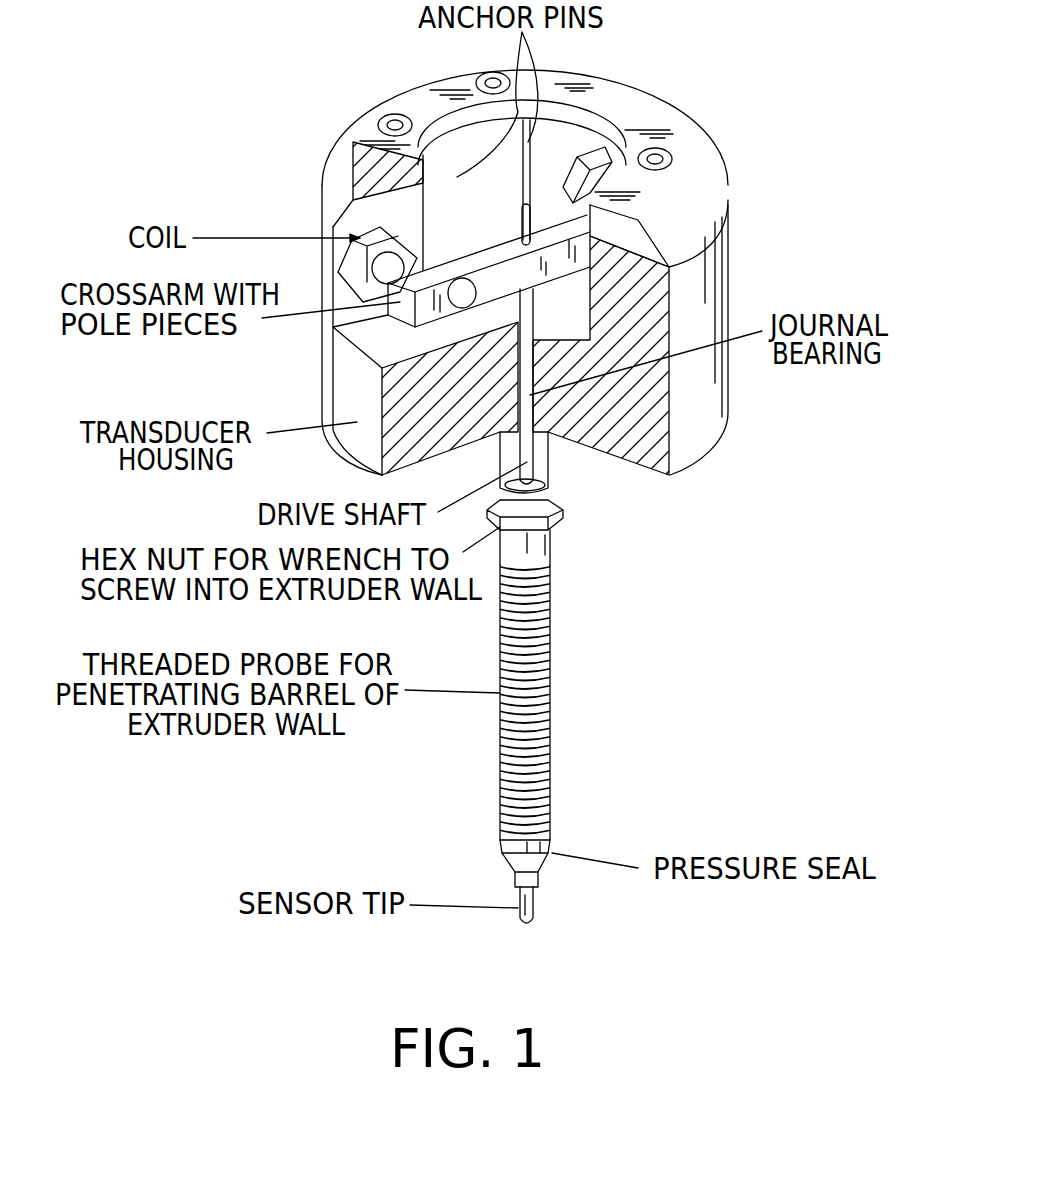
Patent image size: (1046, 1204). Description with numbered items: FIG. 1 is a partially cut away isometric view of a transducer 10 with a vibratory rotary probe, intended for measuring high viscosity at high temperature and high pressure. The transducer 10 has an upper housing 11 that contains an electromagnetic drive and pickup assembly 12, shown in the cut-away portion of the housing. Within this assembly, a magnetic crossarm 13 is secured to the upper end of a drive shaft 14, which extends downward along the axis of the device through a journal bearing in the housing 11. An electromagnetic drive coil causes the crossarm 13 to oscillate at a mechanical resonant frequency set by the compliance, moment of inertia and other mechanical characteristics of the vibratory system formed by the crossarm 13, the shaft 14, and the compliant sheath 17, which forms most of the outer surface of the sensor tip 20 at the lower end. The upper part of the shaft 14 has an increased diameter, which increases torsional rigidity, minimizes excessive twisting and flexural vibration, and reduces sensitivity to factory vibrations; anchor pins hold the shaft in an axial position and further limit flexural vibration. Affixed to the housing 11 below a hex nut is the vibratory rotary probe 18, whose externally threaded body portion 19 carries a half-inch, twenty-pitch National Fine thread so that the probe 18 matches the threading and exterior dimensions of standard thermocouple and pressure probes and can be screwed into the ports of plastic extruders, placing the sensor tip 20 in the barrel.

The transducer 10 is at (735, 205).
The upper housing 11 is at (708, 400).
The electromagnetic drive and pickup assembly 12 is at (455, 252).
The magnetic crossarm 13 is at (547, 290).
The drive shaft 14 is at (545, 450).
The compliant sheath 17 is at (535, 897).
The vibratory rotary probe 18 is at (550, 578).
The externally threaded body portion 19 is at (548, 717).
The sensor tip 20 is at (520, 921).